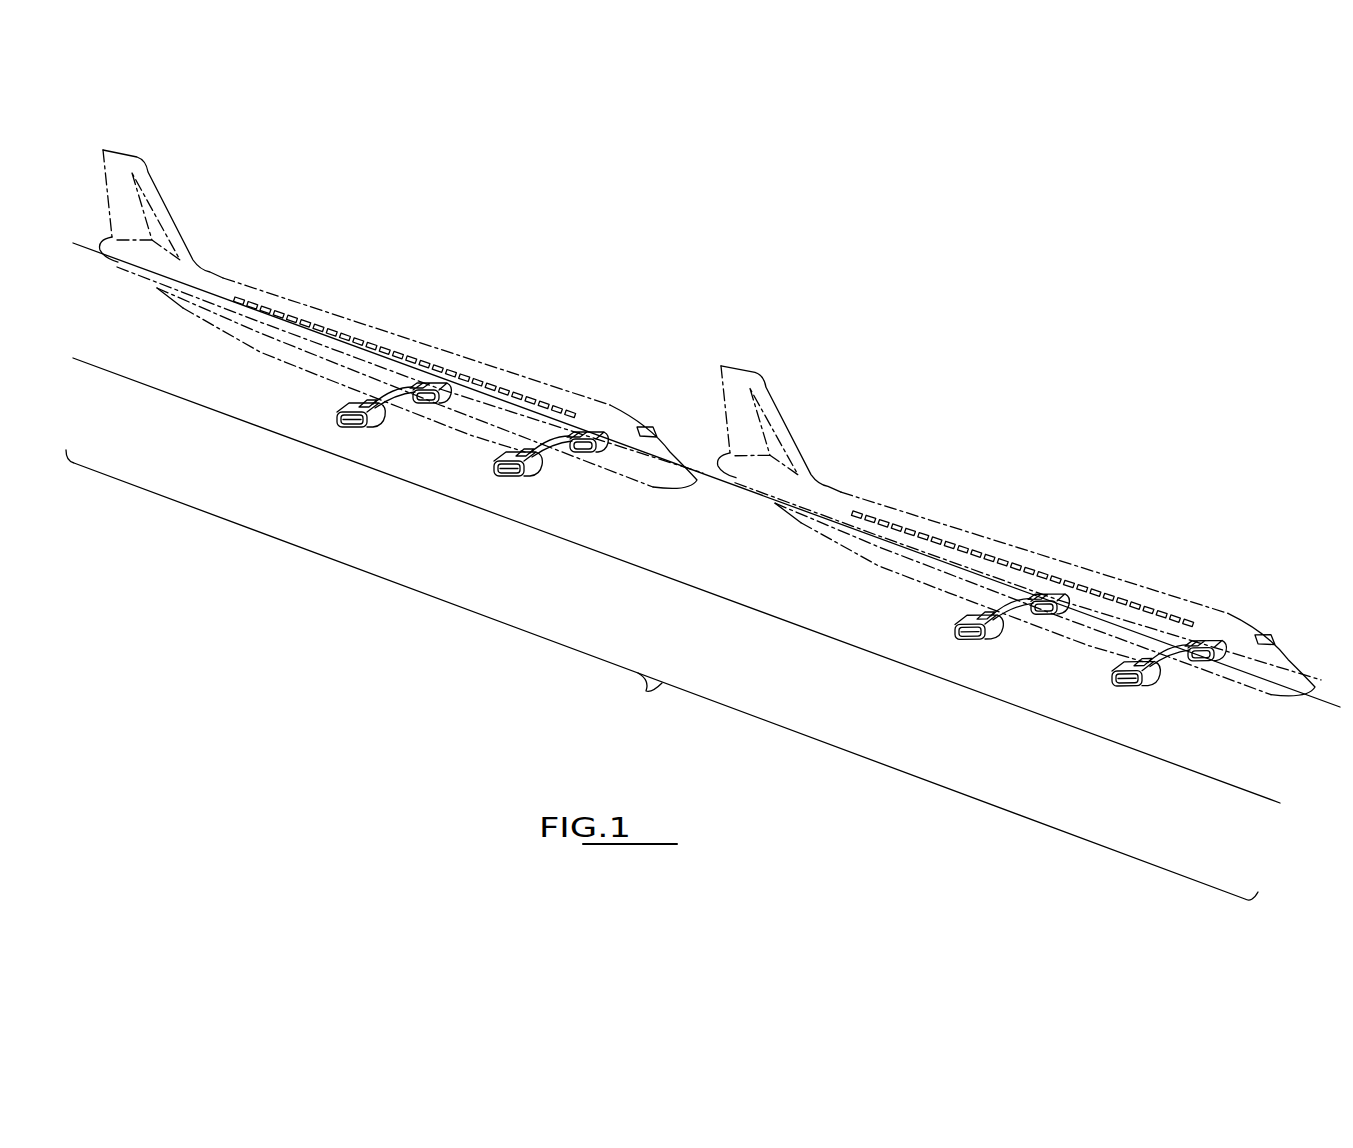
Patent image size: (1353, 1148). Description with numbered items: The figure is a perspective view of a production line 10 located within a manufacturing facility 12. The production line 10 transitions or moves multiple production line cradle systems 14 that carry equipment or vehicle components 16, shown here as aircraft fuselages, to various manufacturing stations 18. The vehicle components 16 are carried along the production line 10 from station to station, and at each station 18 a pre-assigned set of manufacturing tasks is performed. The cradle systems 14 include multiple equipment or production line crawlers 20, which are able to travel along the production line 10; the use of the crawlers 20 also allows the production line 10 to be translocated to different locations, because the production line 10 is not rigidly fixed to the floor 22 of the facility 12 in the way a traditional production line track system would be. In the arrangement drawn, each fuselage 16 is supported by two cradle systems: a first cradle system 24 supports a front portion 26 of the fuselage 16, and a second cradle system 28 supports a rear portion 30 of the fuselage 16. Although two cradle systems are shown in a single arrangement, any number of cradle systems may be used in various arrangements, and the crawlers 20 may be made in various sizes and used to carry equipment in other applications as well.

The production line 10 is at (830, 224).
The manufacturing facility 12 is at (662, 675).
The production line cradle system 14 is at (358, 404).
The vehicle component 16 is at (337, 313).
The manufacturing station 18 is at (391, 486).
The production line crawler 20 is at (437, 405).
The floor 22 is at (1213, 777).
The first cradle system 24 is at (512, 477).
The front portion 26 is at (622, 395).
The second cradle system 28 is at (355, 426).
The rear portion 30 is at (245, 223).